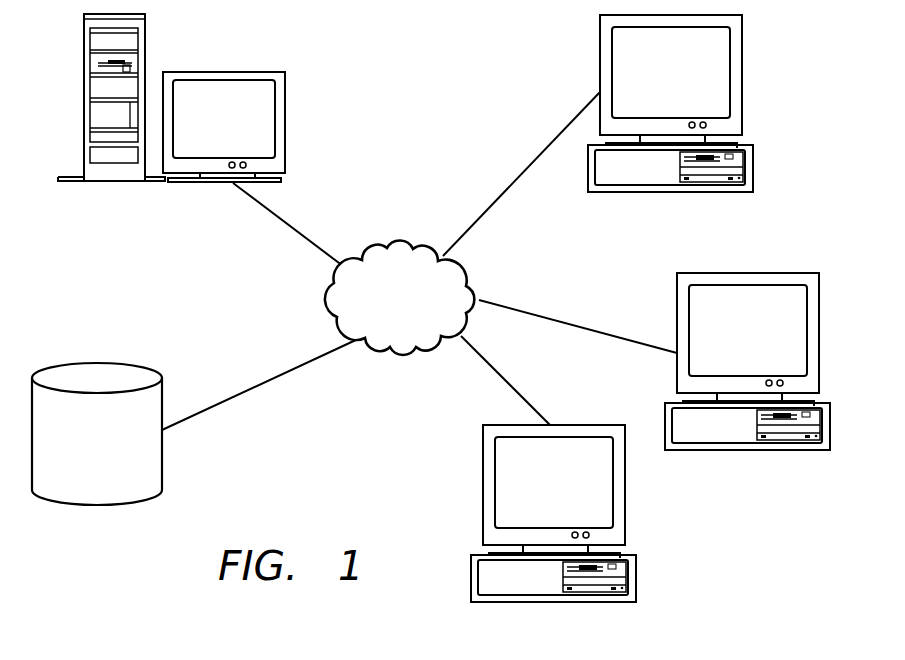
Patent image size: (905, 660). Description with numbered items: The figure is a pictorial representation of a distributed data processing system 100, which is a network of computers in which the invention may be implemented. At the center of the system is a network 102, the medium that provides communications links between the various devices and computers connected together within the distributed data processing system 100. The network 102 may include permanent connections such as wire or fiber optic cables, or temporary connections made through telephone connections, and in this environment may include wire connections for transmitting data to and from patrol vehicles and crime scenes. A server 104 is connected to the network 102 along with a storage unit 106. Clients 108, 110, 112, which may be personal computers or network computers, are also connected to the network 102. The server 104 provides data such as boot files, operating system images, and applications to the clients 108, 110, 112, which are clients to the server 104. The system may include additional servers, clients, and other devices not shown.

The distributed data processing system 100 is at (447, 128).
The network 102 is at (383, 310).
The server 104 is at (205, 127).
The storage unit 106 is at (77, 444).
The client 108 is at (652, 84).
The client 110 is at (728, 344).
The client 112 is at (535, 495).